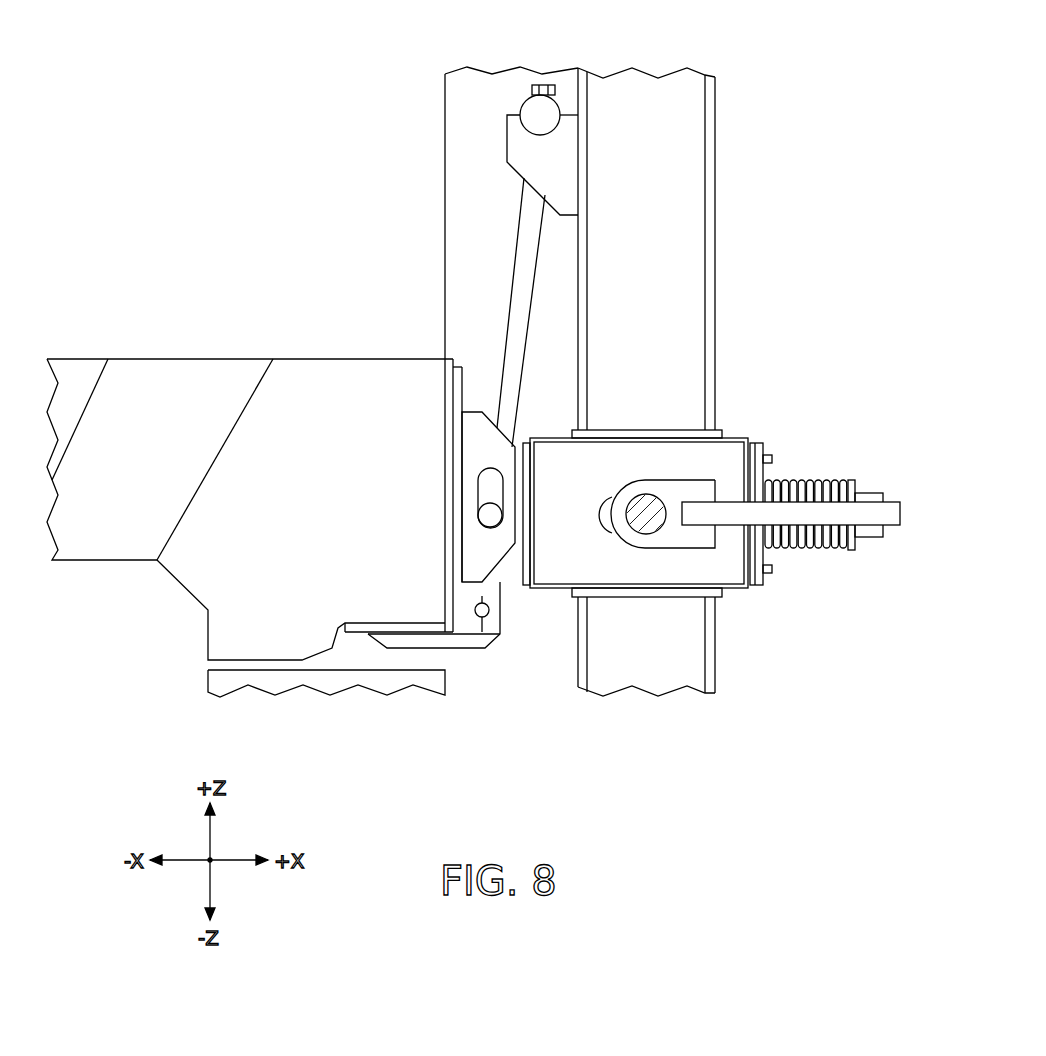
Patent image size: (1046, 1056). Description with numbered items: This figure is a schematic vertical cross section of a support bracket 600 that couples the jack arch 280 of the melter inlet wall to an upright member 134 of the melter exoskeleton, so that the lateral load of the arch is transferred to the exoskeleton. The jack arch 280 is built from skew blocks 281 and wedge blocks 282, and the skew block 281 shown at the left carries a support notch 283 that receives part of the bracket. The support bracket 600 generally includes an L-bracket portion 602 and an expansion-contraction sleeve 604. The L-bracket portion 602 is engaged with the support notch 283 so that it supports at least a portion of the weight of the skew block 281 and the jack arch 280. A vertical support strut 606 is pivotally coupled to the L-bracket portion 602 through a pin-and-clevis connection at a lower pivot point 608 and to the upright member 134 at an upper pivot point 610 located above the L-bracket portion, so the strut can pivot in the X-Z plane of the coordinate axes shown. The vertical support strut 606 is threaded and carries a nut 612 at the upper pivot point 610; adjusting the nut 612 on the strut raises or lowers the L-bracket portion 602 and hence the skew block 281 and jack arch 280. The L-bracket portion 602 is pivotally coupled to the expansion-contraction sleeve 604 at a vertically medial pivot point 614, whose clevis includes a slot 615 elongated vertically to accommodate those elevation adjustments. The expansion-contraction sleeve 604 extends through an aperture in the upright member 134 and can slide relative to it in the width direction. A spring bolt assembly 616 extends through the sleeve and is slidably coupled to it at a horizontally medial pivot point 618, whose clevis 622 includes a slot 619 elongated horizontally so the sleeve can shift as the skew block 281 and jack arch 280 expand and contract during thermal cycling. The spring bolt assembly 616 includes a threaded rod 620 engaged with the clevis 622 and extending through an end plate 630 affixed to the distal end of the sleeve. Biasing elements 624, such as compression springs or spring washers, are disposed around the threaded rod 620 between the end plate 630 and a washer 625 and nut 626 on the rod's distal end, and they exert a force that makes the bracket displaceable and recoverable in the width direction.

The upright member 134 is at (717, 237).
The jack arch 280 is at (218, 336).
The skew block 281 is at (183, 589).
The wedge block 282 is at (150, 363).
The support notch 283 is at (348, 656).
The support bracket 600 is at (516, 668).
The L-bracket portion 602 is at (462, 650).
The expansion-contraction sleeve 604 is at (740, 436).
The vertical support strut 606 is at (507, 296).
The lower pivot point 608 is at (490, 614).
The upper pivot point 610 is at (520, 110).
The nut 612 is at (541, 85).
The vertically medial pivot point 614 is at (470, 498).
The slot 615 is at (478, 470).
The spring bolt assembly 616 is at (827, 473).
The horizontally medial pivot point 618 is at (598, 489).
The slot 619 is at (603, 526).
The threaded rod 620 is at (742, 530).
The clevis 622 is at (655, 589).
The biasing elements 624 is at (838, 548).
The washer 625 is at (858, 482).
The nut 626 is at (878, 540).
The end plate 630 is at (768, 588).